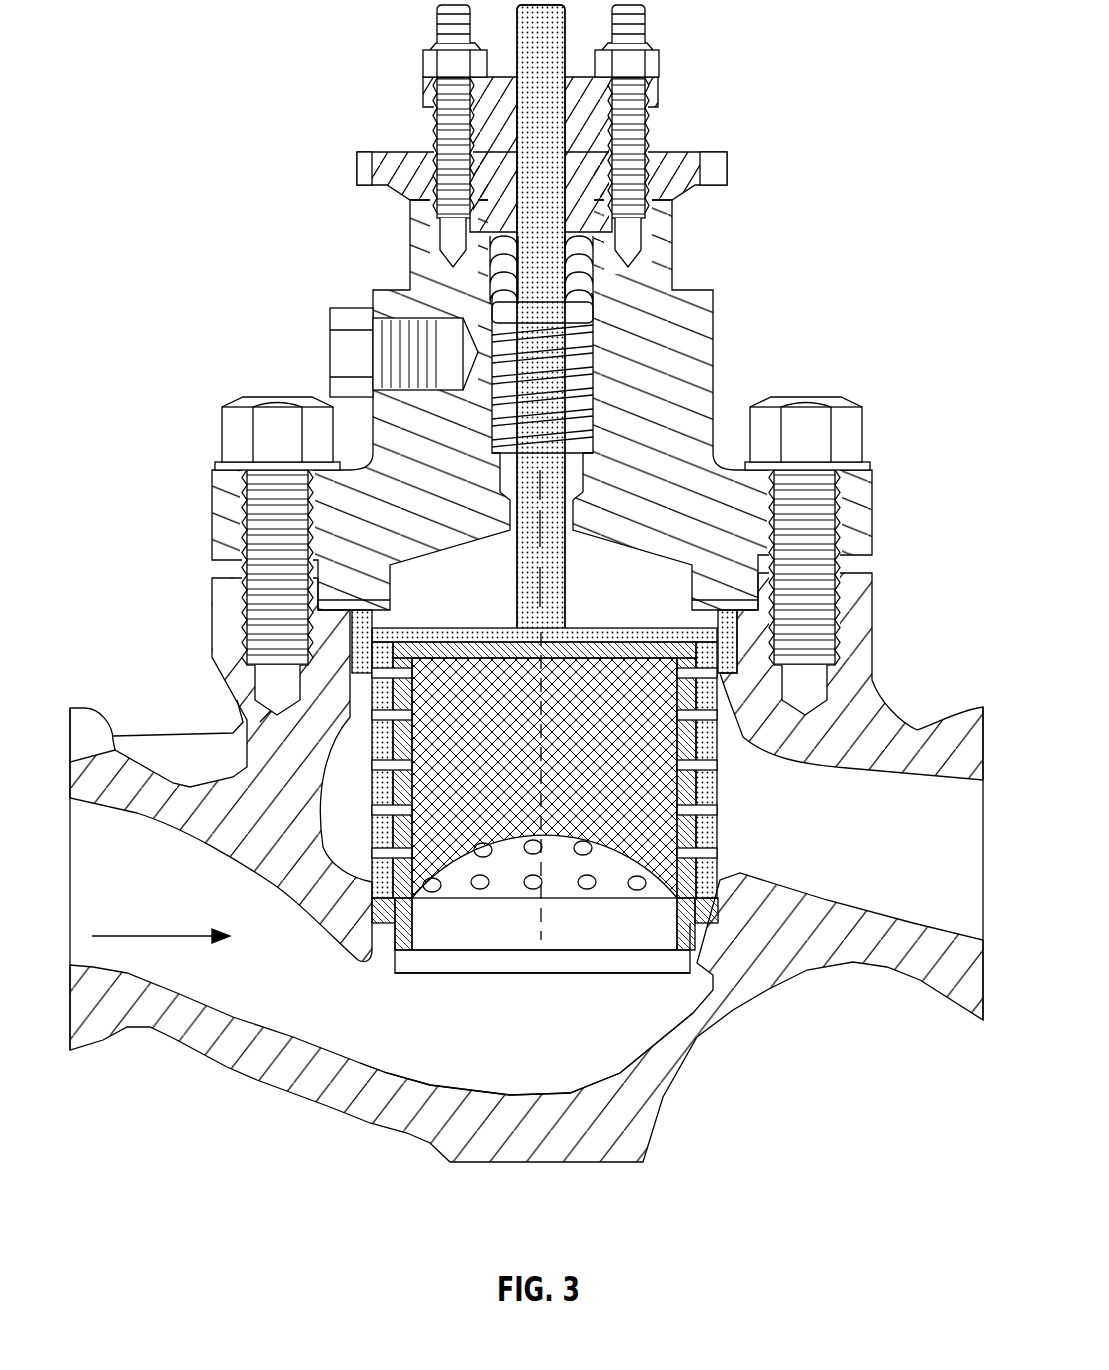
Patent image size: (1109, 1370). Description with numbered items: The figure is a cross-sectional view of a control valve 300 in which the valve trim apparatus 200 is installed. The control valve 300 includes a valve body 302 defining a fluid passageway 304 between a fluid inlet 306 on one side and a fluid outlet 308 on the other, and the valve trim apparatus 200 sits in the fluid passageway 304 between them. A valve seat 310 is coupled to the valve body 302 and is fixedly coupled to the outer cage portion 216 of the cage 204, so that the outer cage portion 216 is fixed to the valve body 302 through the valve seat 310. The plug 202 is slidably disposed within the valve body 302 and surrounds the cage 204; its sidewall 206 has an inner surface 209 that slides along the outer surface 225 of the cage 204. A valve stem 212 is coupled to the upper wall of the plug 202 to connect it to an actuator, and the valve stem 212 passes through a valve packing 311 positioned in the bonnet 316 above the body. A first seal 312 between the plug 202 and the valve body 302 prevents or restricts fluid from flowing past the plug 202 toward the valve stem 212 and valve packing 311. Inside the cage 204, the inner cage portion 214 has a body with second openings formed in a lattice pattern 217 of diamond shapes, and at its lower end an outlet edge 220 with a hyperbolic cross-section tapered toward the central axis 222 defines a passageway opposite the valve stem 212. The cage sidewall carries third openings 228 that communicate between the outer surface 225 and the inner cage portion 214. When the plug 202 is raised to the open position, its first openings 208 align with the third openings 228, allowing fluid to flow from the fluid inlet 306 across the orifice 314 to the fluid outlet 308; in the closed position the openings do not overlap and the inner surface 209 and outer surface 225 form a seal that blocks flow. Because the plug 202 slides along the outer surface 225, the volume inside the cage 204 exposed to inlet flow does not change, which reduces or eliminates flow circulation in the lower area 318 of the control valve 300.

The control valve 300 is at (526, 583).
The valve body 302 is at (872, 632).
The fluid passageway 304 is at (277, 964).
The fluid inlet 306 is at (72, 888).
The fluid outlet 308 is at (983, 925).
The valve seat 310 is at (372, 960).
The valve packing 311 is at (595, 268).
The first seal 312 is at (722, 700).
The orifice 314 is at (589, 990).
The bonnet 316 is at (410, 290).
The lower area 318 is at (485, 1052).
The valve trim apparatus 200 is at (549, 779).
The plug 202 is at (549, 735).
The cage 204 is at (668, 642).
The sidewall 206 is at (716, 792).
The first openings 208 is at (382, 806).
The inner surface 209 is at (690, 782).
The valve stem 212 is at (572, 316).
The inner cage portion 214 is at (545, 817).
The outer cage portion 216 is at (675, 960).
The lattice pattern 217 is at (575, 835).
The outlet edge 220 is at (472, 862).
The central axis 222 is at (542, 567).
The outer surface 225 is at (400, 830).
The third openings 228 is at (717, 840).